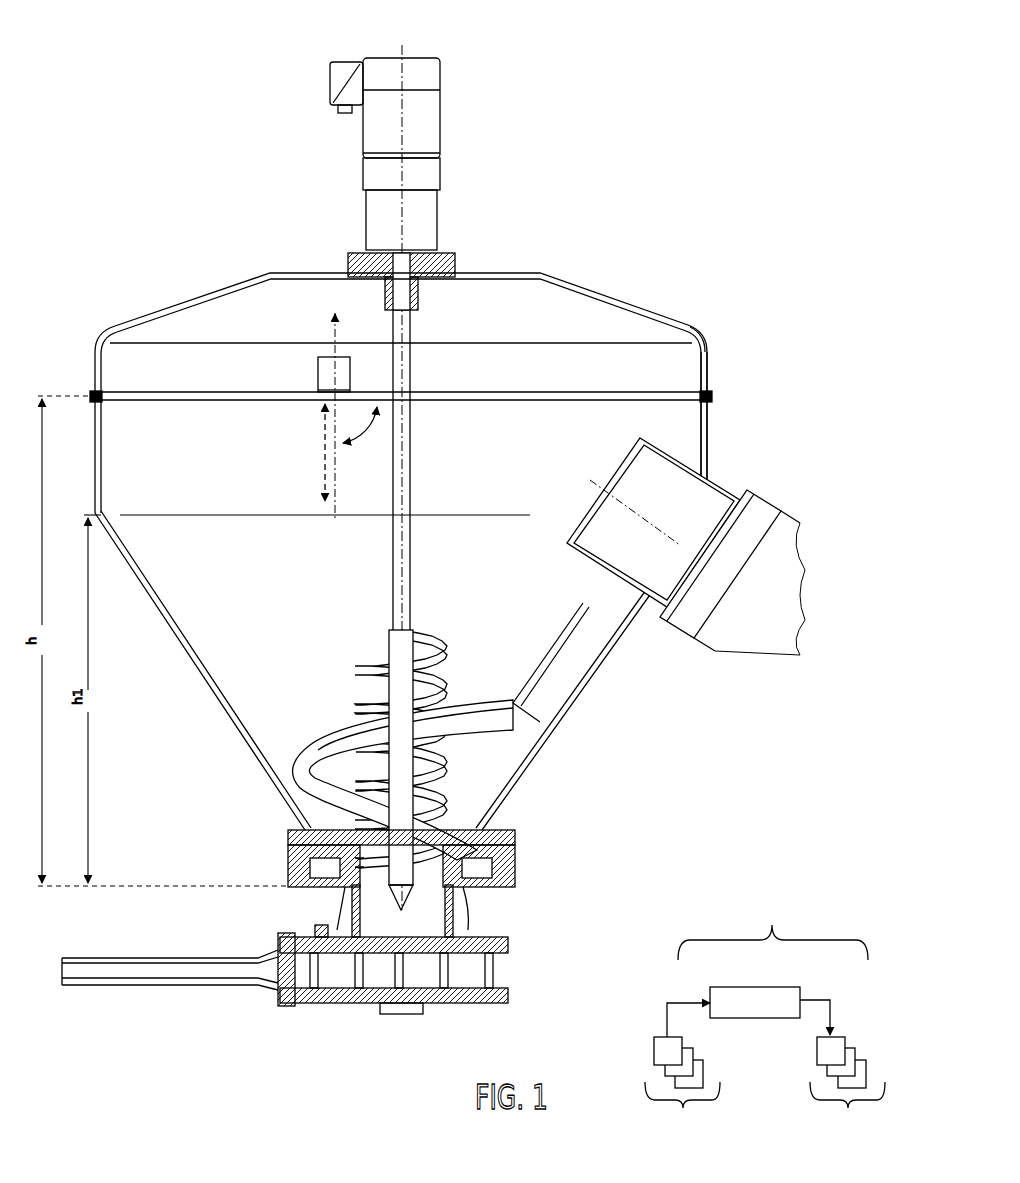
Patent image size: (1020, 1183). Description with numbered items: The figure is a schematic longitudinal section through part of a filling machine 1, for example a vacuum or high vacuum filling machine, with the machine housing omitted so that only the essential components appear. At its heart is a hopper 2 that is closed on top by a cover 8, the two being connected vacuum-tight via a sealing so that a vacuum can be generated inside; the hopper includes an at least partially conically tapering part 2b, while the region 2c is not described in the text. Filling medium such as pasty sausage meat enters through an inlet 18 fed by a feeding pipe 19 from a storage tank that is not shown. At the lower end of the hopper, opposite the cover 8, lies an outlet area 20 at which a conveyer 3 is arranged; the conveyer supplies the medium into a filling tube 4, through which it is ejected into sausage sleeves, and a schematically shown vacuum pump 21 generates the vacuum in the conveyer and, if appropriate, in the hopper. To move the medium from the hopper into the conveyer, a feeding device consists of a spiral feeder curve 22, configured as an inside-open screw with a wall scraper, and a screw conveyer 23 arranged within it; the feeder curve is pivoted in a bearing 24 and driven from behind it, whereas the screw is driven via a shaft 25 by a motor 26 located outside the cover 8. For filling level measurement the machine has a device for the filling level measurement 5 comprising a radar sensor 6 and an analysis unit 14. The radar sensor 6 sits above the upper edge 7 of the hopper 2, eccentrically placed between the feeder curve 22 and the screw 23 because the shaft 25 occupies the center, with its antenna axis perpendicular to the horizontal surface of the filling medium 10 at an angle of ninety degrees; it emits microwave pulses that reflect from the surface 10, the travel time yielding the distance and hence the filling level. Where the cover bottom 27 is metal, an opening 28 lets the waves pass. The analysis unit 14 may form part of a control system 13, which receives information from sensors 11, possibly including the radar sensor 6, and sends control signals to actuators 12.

The filling machine 1 is at (638, 172).
The hopper 2 is at (95, 452).
The conically tapering part 2b is at (165, 633).
The inlet channel 2c is at (551, 662).
The conveyer 3 is at (452, 1003).
The filling tube 4 is at (207, 957).
The device for the filling level measurement 5 is at (318, 408).
The radar sensor 6 is at (318, 373).
The upper edge 7 is at (713, 400).
The cover 8 is at (175, 305).
The surface of the filling medium 10 is at (200, 515).
The sensors 11 is at (682, 1100).
The actuators 12 is at (847, 1098).
The control system 13 is at (773, 913).
The analysis unit 14 is at (770, 990).
The inlet 18 is at (712, 482).
The feeding pipe 19 is at (760, 524).
The outlet area 20 is at (445, 928).
The vacuum pump 21 is at (398, 1012).
The feeder curve 22 is at (325, 740).
The screw conveyer 23 is at (414, 640).
The bearing 24 is at (515, 870).
The shaft 25 is at (412, 420).
The motor 26 is at (440, 140).
The cover bottom 27 is at (660, 392).
The opening 28 is at (352, 392).